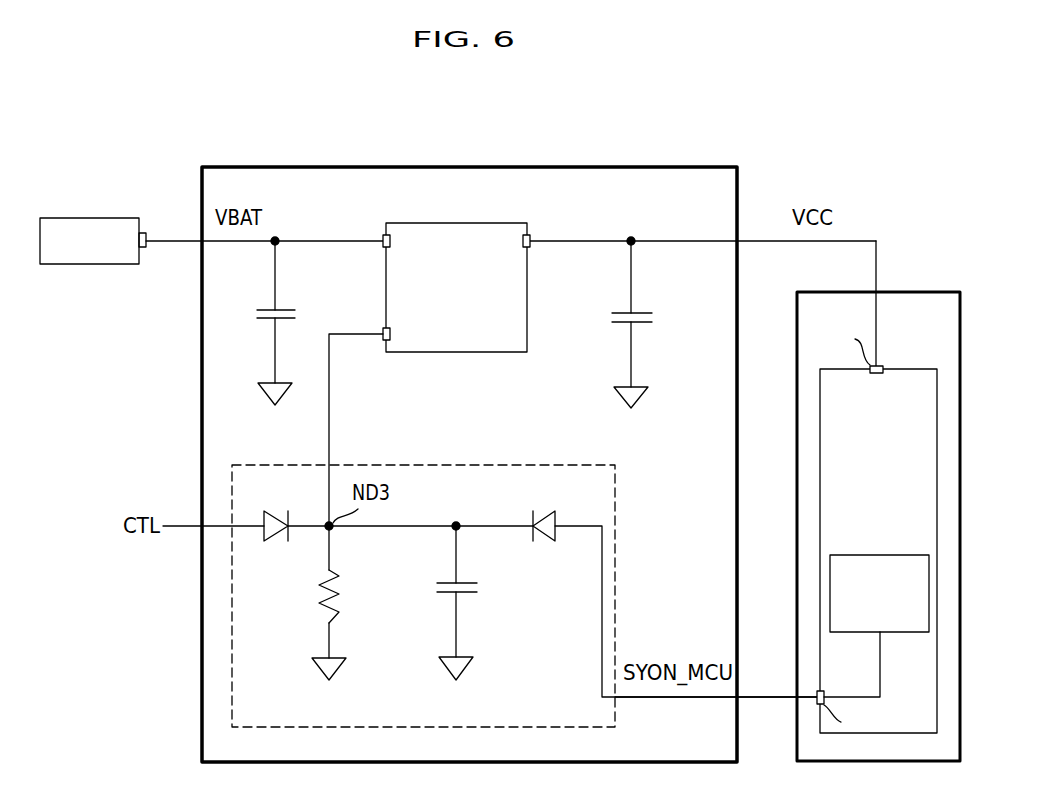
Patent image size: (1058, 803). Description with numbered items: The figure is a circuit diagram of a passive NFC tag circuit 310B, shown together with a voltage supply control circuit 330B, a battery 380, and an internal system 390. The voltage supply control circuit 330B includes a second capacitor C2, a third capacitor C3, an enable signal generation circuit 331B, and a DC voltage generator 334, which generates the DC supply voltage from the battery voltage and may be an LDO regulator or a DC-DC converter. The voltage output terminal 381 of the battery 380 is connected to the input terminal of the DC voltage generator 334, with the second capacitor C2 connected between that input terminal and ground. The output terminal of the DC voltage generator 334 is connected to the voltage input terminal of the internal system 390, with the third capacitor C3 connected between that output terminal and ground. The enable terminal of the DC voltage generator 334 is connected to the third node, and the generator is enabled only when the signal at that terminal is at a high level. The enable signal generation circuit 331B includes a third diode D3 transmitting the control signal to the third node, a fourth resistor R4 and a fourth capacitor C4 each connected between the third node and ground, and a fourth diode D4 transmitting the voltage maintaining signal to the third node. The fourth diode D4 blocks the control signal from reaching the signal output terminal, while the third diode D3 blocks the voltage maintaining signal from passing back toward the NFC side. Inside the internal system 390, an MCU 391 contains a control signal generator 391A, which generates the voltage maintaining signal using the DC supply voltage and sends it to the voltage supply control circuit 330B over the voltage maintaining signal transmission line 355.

The passive NFC tag circuit 310B is at (198, 158).
The voltage supply control circuit 330B is at (400, 152).
The enable signal generation circuit 331B is at (430, 449).
The DC voltage generator 334 is at (470, 222).
The battery 380 is at (107, 206).
The voltage output terminal 381 is at (167, 220).
The internal system 390 is at (918, 291).
The MCU 391 is at (908, 368).
The control signal generator 391A is at (878, 539).
The voltage maintaining signal transmission line 355 is at (750, 697).
The second capacitor C2 is at (263, 339).
The third capacitor C3 is at (616, 339).
The fourth capacitor C4 is at (442, 619).
The third diode D3 is at (273, 511).
The fourth diode D4 is at (540, 511).
The fourth resistor R4 is at (314, 642).